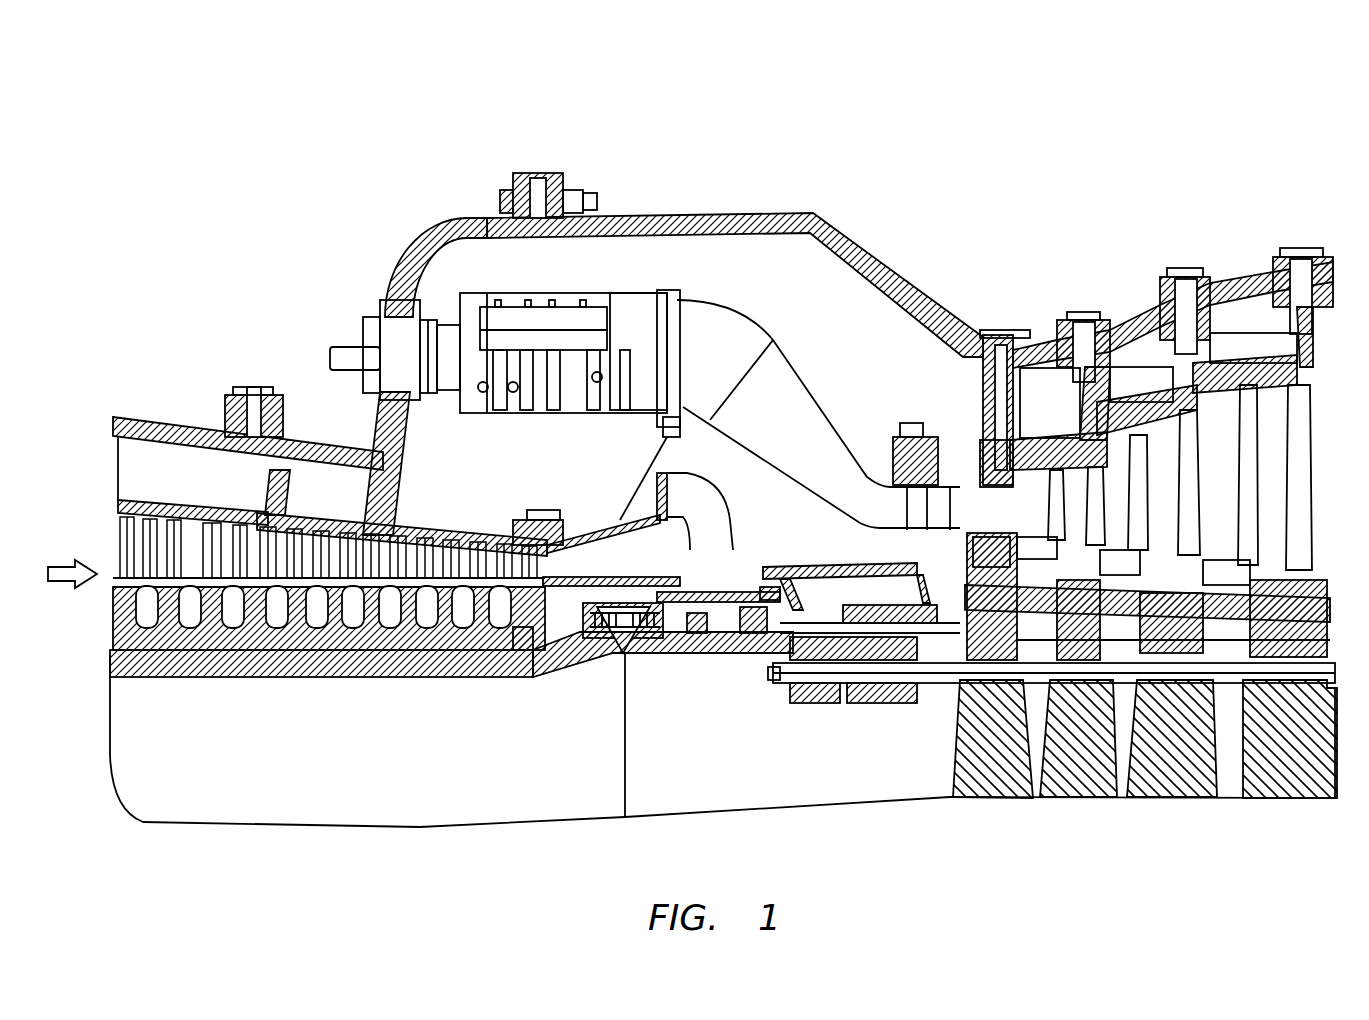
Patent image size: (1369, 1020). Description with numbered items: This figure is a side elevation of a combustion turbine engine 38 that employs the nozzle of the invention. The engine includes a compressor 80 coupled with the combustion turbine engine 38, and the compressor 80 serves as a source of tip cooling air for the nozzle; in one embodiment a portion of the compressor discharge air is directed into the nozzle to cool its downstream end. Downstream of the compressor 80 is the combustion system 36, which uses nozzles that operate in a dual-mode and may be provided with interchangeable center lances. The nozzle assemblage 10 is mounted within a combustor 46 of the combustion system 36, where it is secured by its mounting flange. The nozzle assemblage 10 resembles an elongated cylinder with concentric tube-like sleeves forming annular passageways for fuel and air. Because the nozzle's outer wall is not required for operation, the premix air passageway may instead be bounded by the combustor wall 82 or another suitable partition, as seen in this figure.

The compressor 80 is at (173, 476).
The combustor 46 is at (447, 297).
The combustor wall 82 is at (480, 303).
The nozzle assemblage 10 is at (570, 323).
The combustion system 36 is at (737, 255).
The combustion turbine engine 38 is at (1140, 118).